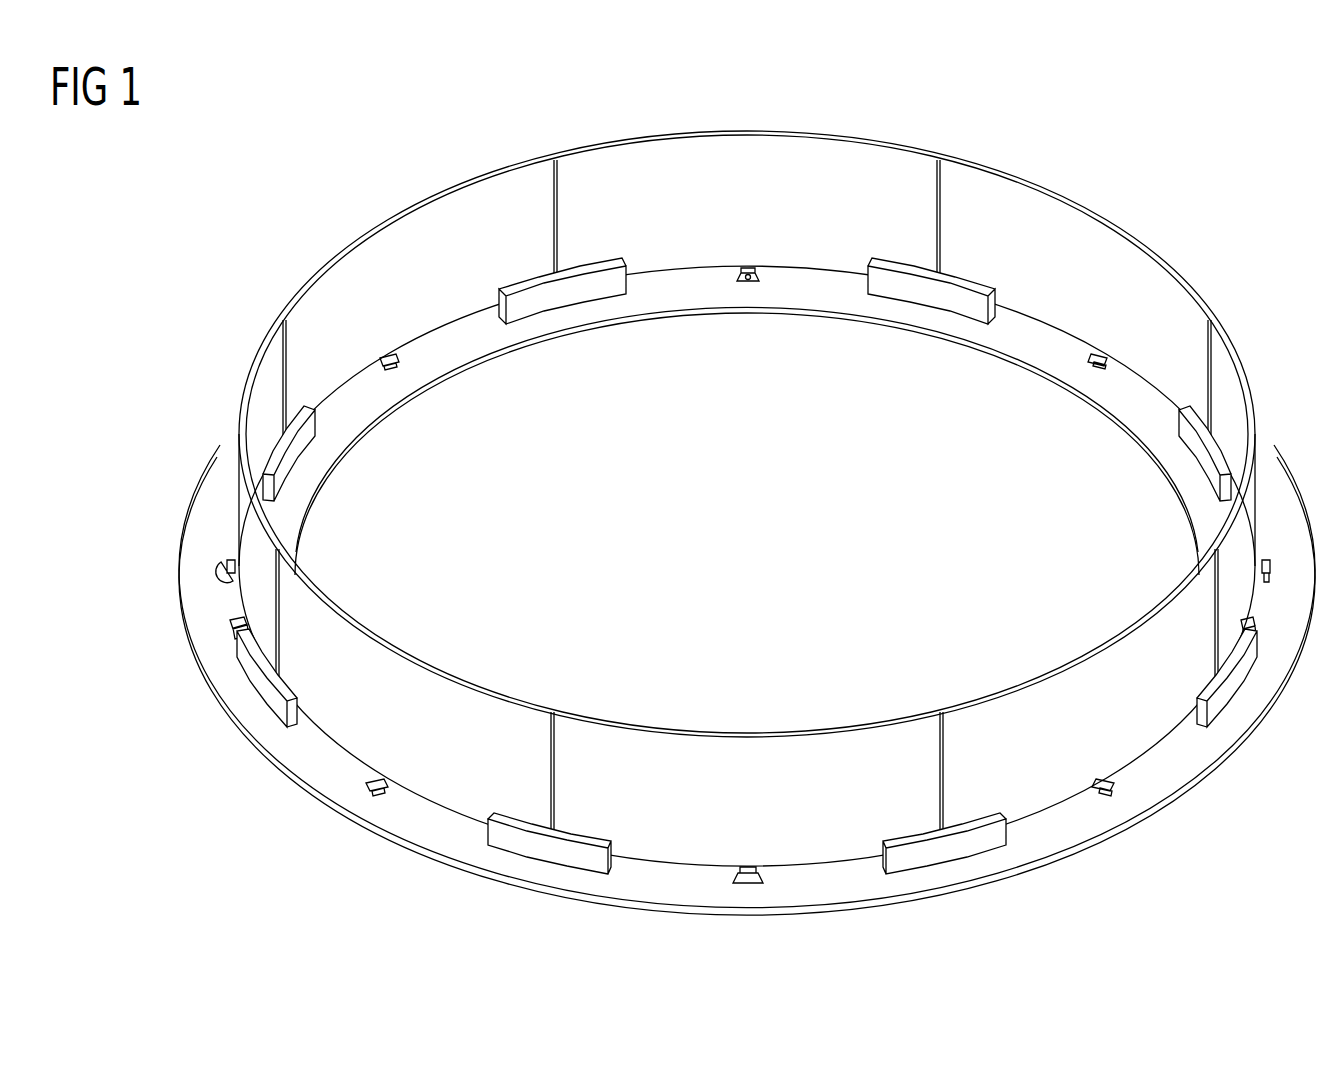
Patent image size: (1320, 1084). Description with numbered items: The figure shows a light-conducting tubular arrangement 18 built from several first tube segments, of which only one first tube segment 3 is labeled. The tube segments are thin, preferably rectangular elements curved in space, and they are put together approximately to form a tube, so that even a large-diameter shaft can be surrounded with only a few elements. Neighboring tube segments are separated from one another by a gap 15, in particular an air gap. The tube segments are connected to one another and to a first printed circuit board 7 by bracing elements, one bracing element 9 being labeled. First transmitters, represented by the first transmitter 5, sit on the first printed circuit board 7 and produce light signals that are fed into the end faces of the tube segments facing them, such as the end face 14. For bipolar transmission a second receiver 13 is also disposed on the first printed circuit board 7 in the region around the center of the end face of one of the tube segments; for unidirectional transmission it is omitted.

The tubular arrangement 18 is at (725, 496).
The first tube segment 3 is at (884, 152).
The gap 15 is at (942, 155).
The end face 14 is at (668, 268).
The first transmitter 5 is at (748, 282).
The bracing element 9 is at (1195, 452).
The second receiver 13 is at (220, 568).
The first printed circuit board 7 is at (203, 628).